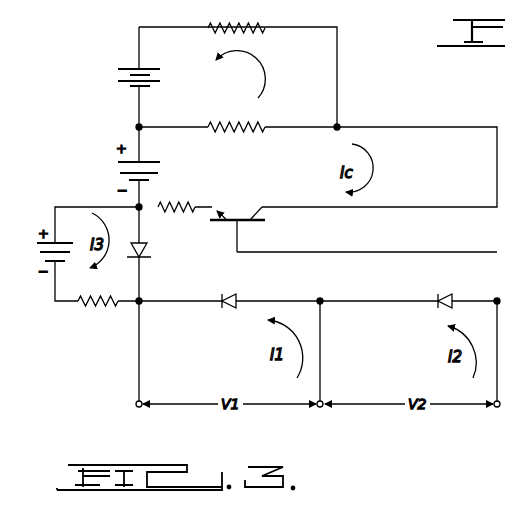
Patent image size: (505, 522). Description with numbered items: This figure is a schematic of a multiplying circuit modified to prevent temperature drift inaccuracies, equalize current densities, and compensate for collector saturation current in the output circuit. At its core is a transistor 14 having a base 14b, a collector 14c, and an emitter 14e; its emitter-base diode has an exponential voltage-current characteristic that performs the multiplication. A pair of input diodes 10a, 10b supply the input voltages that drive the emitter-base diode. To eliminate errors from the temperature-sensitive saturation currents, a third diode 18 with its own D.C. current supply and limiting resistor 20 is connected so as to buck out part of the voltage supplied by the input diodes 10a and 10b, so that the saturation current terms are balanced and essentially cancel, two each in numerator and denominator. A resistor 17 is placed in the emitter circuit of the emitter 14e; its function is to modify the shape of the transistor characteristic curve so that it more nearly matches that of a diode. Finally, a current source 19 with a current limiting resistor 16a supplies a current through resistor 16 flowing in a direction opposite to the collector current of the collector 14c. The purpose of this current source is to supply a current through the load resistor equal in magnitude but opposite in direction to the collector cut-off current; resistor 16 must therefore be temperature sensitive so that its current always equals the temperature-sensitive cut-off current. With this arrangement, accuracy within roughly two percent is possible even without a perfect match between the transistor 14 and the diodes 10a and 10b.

The current limiting resistor 16a is at (223, 26).
The resistor 16 is at (243, 130).
The current source 19 is at (131, 68).
The emitter resistor 17 is at (178, 205).
The transistor 14 is at (245, 217).
The emitter 14e is at (209, 210).
The collector 14c is at (262, 205).
The base 14b is at (244, 226).
The third diode 18 is at (150, 256).
The input diode 10a is at (228, 295).
The input diode 10b is at (443, 296).
The limiting resistor 20 is at (100, 304).